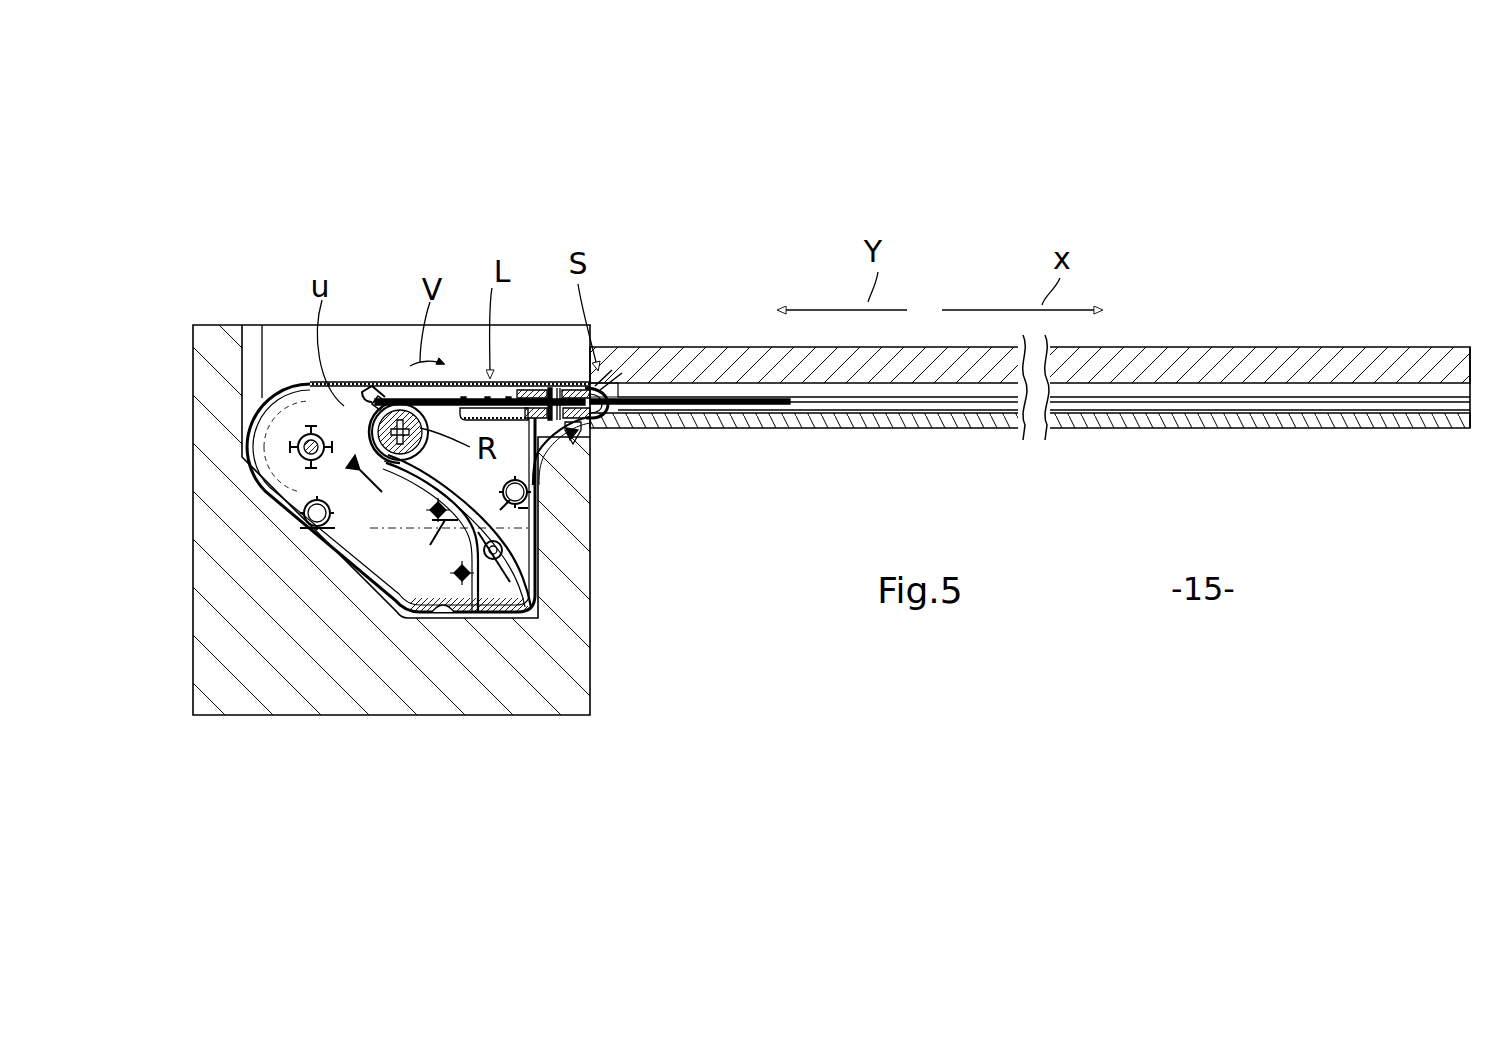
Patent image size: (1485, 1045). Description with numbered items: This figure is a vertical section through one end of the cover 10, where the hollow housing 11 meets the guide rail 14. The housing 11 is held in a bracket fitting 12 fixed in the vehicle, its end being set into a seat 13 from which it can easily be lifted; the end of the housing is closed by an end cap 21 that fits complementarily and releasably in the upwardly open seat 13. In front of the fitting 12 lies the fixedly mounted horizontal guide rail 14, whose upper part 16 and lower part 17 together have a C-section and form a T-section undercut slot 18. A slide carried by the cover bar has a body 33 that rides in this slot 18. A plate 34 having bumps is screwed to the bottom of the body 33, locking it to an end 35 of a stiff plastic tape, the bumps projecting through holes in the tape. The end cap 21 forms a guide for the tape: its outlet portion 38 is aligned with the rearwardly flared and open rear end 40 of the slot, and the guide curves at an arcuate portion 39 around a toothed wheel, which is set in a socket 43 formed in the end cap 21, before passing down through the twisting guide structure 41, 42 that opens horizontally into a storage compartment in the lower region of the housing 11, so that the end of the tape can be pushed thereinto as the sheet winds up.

The cover 10 is at (765, 248).
The hollow housing 11 is at (488, 628).
The bracket fitting 12 is at (192, 320).
The seat 13 is at (246, 348).
The guide rail 14 is at (1030, 375).
The upper part 16 is at (1213, 342).
The lower part 17 is at (1272, 436).
The undercut slot 18 is at (824, 414).
The end cap 21 is at (368, 358).
The body 33 is at (531, 378).
The plate 34 is at (573, 448).
The end 35 is at (588, 468).
The outlet portion 38 is at (558, 378).
The arcuate portion 39 is at (379, 484).
The rear end 40 is at (612, 370).
The twisting guide structure 41 is at (446, 563).
The twisting guide structure 42 is at (514, 613).
The socket 43 is at (293, 469).